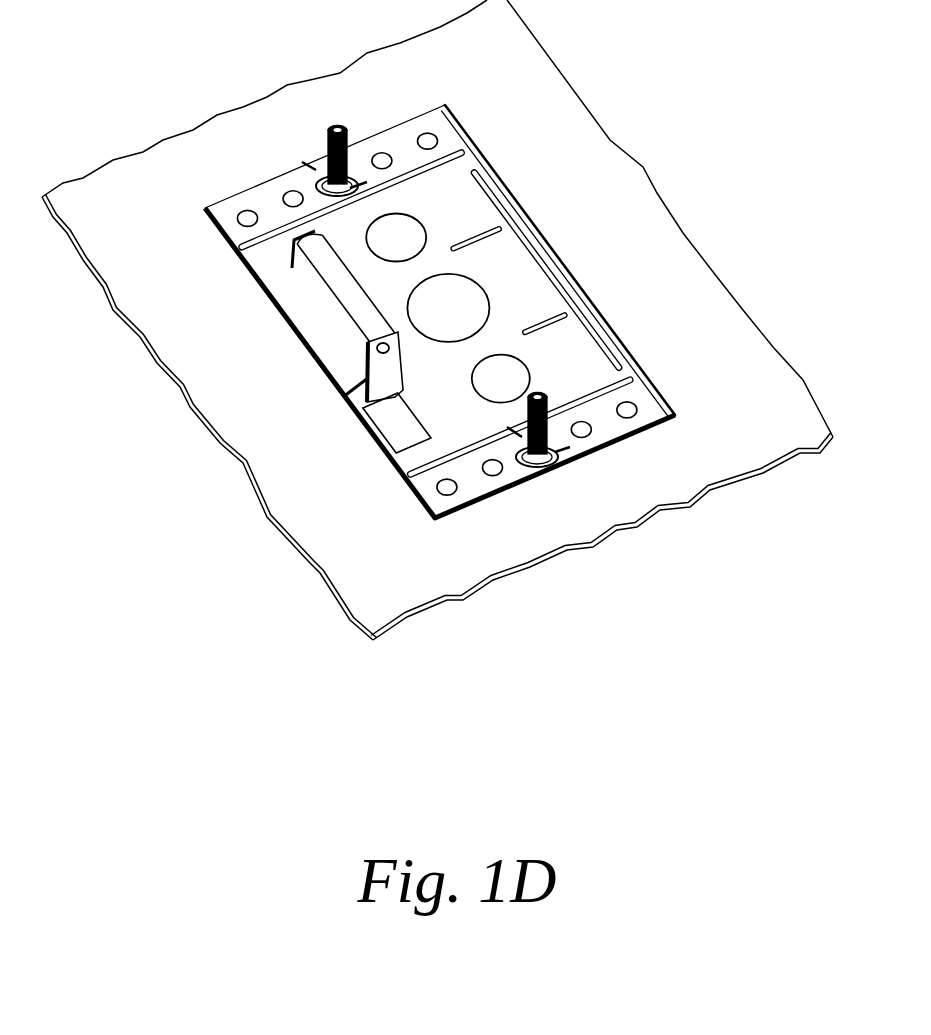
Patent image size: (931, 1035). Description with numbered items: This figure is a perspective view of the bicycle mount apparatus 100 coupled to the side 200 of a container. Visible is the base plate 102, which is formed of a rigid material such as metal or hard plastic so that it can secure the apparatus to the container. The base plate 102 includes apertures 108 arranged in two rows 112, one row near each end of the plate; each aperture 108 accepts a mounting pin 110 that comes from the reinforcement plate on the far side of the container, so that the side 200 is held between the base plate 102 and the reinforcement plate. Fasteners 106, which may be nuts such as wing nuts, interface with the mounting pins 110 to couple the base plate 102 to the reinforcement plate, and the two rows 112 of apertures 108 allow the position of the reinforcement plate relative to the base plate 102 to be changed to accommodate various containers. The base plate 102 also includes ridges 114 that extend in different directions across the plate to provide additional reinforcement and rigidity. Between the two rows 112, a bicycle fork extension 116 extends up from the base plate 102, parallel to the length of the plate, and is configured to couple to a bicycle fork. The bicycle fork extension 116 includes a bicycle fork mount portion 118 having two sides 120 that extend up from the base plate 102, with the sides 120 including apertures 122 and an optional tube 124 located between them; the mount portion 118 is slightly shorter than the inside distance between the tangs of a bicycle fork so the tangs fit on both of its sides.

The bicycle mount apparatus 100 is at (450, 284).
The base plate 102 is at (220, 196).
The fasteners 106 is at (303, 162).
The aperture 108 is at (426, 133).
The mounting pin 110 is at (334, 129).
The rows 112 is at (467, 115).
The ridges 114 is at (464, 152).
The bicycle fork extension 116 is at (322, 338).
The bicycle fork mount portion 118 is at (335, 298).
The sides 120 is at (297, 263).
The apertures 122 is at (390, 355).
The tube 124 is at (342, 283).
The side 200 is at (740, 488).